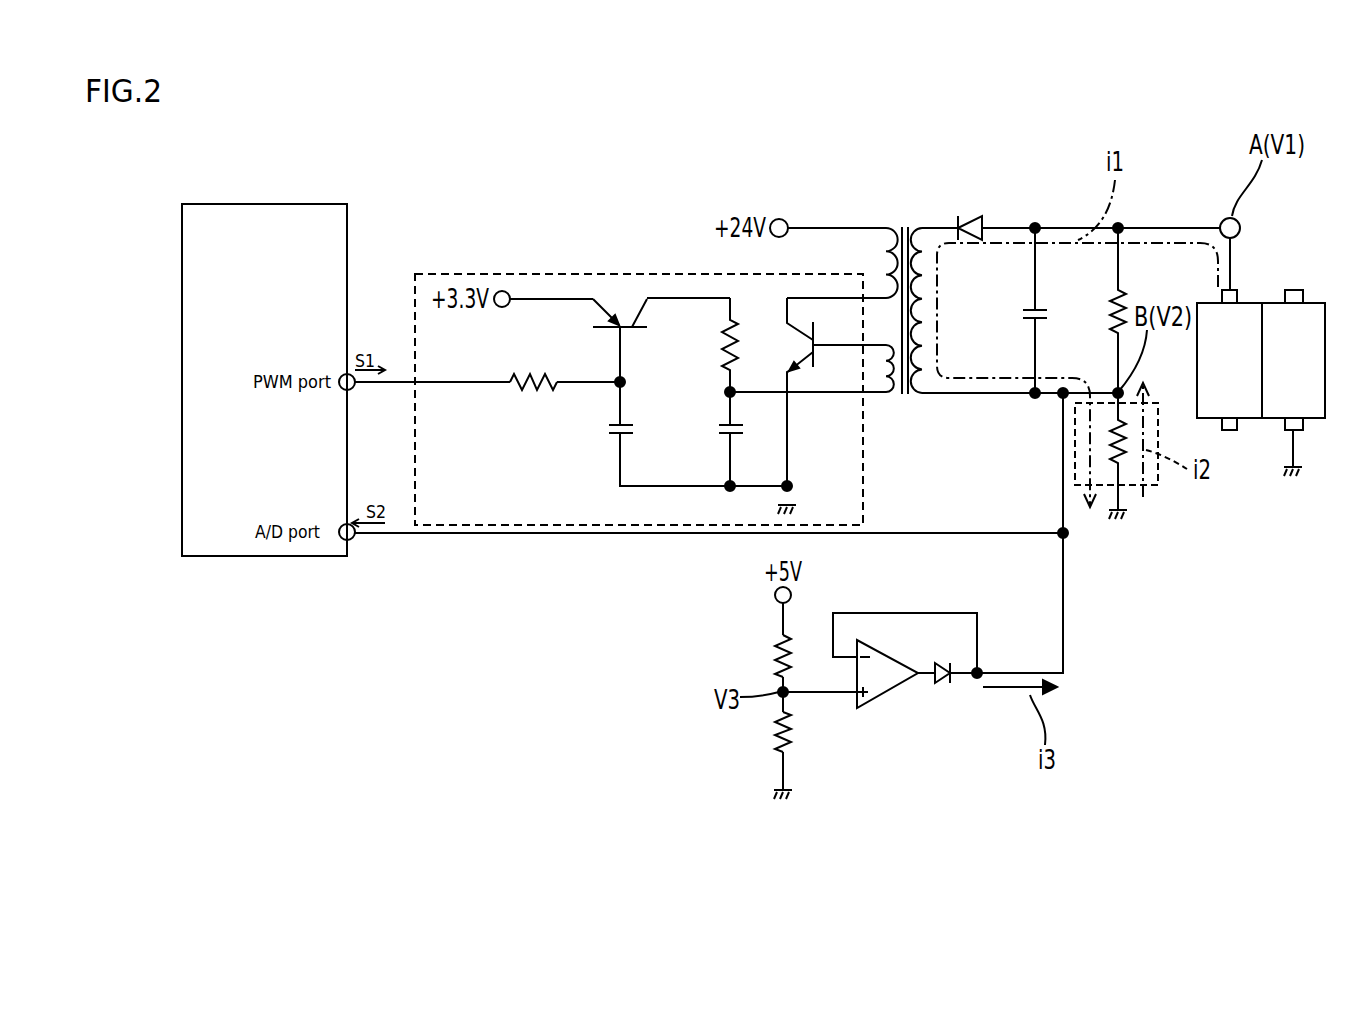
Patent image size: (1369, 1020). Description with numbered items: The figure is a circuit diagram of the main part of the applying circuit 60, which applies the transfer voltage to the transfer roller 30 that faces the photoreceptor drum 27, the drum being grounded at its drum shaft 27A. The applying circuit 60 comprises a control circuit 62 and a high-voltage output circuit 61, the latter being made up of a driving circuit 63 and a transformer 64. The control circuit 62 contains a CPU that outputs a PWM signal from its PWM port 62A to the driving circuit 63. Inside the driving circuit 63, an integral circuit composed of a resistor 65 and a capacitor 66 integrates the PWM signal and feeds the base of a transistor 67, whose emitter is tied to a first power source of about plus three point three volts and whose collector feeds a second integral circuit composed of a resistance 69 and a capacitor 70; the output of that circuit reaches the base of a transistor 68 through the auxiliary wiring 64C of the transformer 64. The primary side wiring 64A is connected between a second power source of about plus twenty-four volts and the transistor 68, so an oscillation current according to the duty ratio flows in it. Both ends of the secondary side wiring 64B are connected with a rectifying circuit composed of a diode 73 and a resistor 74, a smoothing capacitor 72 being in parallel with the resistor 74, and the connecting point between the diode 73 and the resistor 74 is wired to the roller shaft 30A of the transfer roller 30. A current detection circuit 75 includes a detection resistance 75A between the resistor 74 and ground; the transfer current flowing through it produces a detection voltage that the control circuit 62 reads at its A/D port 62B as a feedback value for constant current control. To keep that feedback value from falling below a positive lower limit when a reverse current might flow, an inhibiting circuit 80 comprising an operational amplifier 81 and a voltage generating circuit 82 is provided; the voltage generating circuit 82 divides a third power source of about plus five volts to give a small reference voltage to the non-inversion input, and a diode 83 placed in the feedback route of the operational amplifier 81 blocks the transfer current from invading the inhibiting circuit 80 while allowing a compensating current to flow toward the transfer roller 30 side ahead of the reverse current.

The photoreceptor drum 27 is at (1310, 371).
The drum shaft 27A is at (1300, 433).
The transfer roller 30 is at (1207, 407).
The roller shaft 30A is at (1237, 288).
The applying circuit 60 is at (533, 133).
The high-voltage output circuit 61 is at (610, 199).
The control circuit 62 is at (313, 203).
The PWM port 62A is at (350, 389).
The A/D port 62B is at (352, 540).
The driving circuit 63 is at (512, 272).
The transformer 64 is at (992, 132).
The primary side wiring 64A is at (877, 227).
The secondary side wiring 64B is at (930, 227).
The auxiliary wiring 64C is at (884, 343).
The resistor 65 is at (530, 395).
The capacitor 66 is at (613, 438).
The transistor 67 is at (636, 329).
The transistor 68 is at (818, 366).
The resistance 69 is at (735, 333).
The capacitor 70 is at (743, 423).
The smoothing capacitor 72 is at (1027, 309).
The diode 73 is at (970, 213).
The resistor 74 is at (1125, 290).
The current detection circuit 75 is at (1160, 473).
The detection resistance 75A is at (1123, 432).
The inhibiting circuit 80 is at (932, 733).
The operational amplifier 81 is at (880, 690).
The voltage generating circuit 82 is at (816, 751).
The diode 83 is at (945, 680).